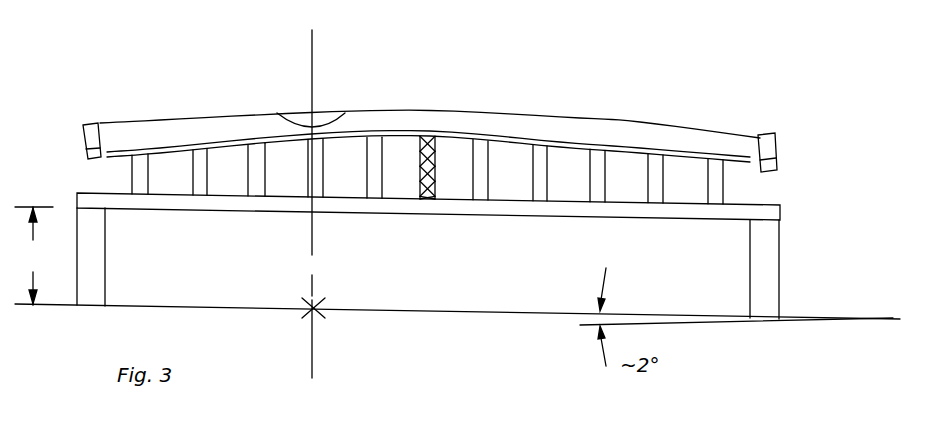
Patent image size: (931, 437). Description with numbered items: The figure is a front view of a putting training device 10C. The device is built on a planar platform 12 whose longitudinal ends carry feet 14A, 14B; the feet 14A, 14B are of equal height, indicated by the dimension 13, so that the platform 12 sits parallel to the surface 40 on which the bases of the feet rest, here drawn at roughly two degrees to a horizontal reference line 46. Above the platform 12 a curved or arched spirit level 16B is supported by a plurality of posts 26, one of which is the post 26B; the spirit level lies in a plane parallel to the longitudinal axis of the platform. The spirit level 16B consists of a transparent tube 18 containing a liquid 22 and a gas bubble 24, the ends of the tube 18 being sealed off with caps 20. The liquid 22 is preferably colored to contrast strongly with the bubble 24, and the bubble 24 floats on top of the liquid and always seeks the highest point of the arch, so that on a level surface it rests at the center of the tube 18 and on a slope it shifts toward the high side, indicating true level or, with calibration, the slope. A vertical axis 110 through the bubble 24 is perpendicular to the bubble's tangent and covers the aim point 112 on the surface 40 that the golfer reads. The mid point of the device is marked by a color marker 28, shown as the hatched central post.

The putting training device 10C is at (352, 76).
The planar platform 12 is at (95, 193).
The height of base 13 is at (34, 256).
The foot 14A is at (105, 240).
The foot 14B is at (779, 246).
The curved spirit level 16B is at (602, 116).
The transparent tube 18 is at (420, 112).
The cap 20 is at (768, 134).
The liquid 22 is at (500, 121).
The gas bubble 24 is at (305, 112).
The posts 26 is at (723, 184).
The post 26B is at (488, 190).
The color marker 28 is at (412, 198).
The support surface 40 is at (192, 305).
The horizontal reference line 46 is at (580, 326).
The vertical axis 110 is at (312, 256).
The aim point 112 is at (320, 313).